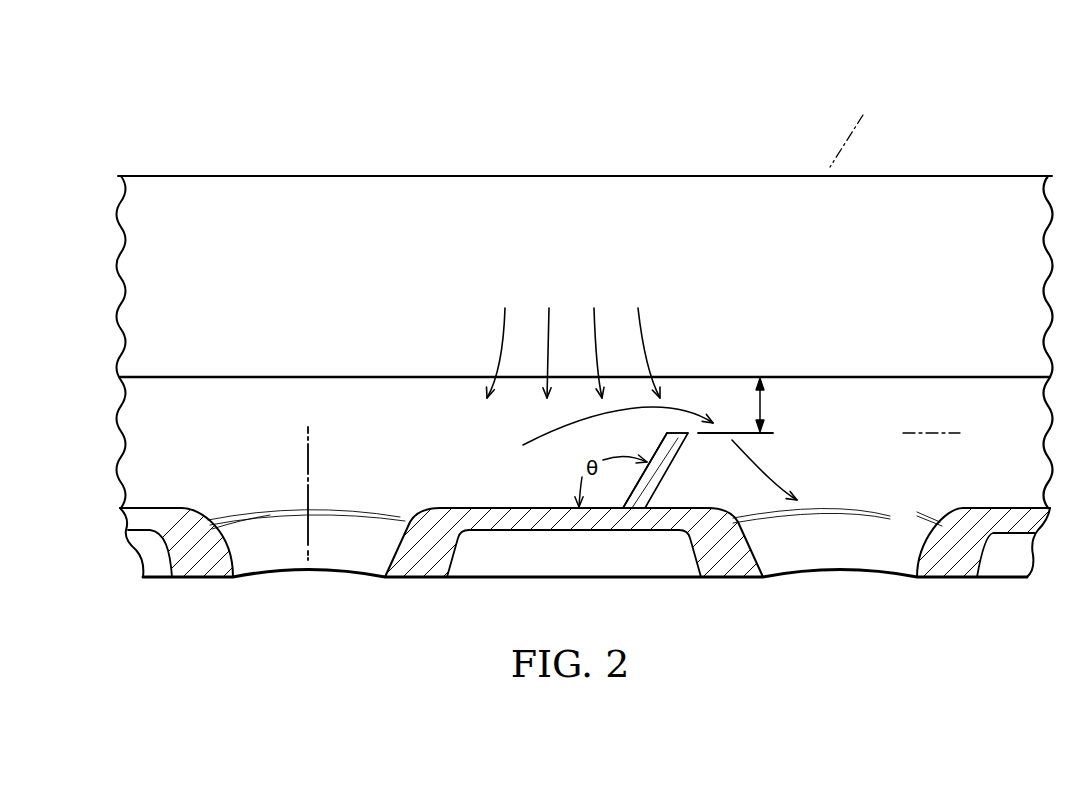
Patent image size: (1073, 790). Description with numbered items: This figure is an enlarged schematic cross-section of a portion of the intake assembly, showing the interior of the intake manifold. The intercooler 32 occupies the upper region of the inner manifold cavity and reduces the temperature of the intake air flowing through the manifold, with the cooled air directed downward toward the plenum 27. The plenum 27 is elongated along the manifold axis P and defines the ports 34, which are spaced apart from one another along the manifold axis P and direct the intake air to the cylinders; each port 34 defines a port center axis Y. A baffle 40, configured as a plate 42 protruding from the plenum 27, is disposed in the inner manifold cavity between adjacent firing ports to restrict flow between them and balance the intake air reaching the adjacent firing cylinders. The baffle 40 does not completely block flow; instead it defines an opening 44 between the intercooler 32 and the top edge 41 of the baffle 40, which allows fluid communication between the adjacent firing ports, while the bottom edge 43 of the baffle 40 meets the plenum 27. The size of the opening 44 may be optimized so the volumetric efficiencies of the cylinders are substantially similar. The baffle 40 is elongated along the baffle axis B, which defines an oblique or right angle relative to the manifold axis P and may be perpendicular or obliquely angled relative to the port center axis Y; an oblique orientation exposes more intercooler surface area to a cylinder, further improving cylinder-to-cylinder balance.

The intercooler 32 is at (590, 176).
The port 34 is at (323, 575).
The plenum 27 is at (537, 507).
The baffle 40 is at (672, 453).
The top edge 41 is at (678, 433).
The plate 42 is at (638, 481).
The bottom edge 43 is at (636, 508).
The opening 44 is at (762, 410).
The baffle axis B is at (855, 128).
The manifold axis P is at (947, 433).
The port center axis Y is at (307, 479).